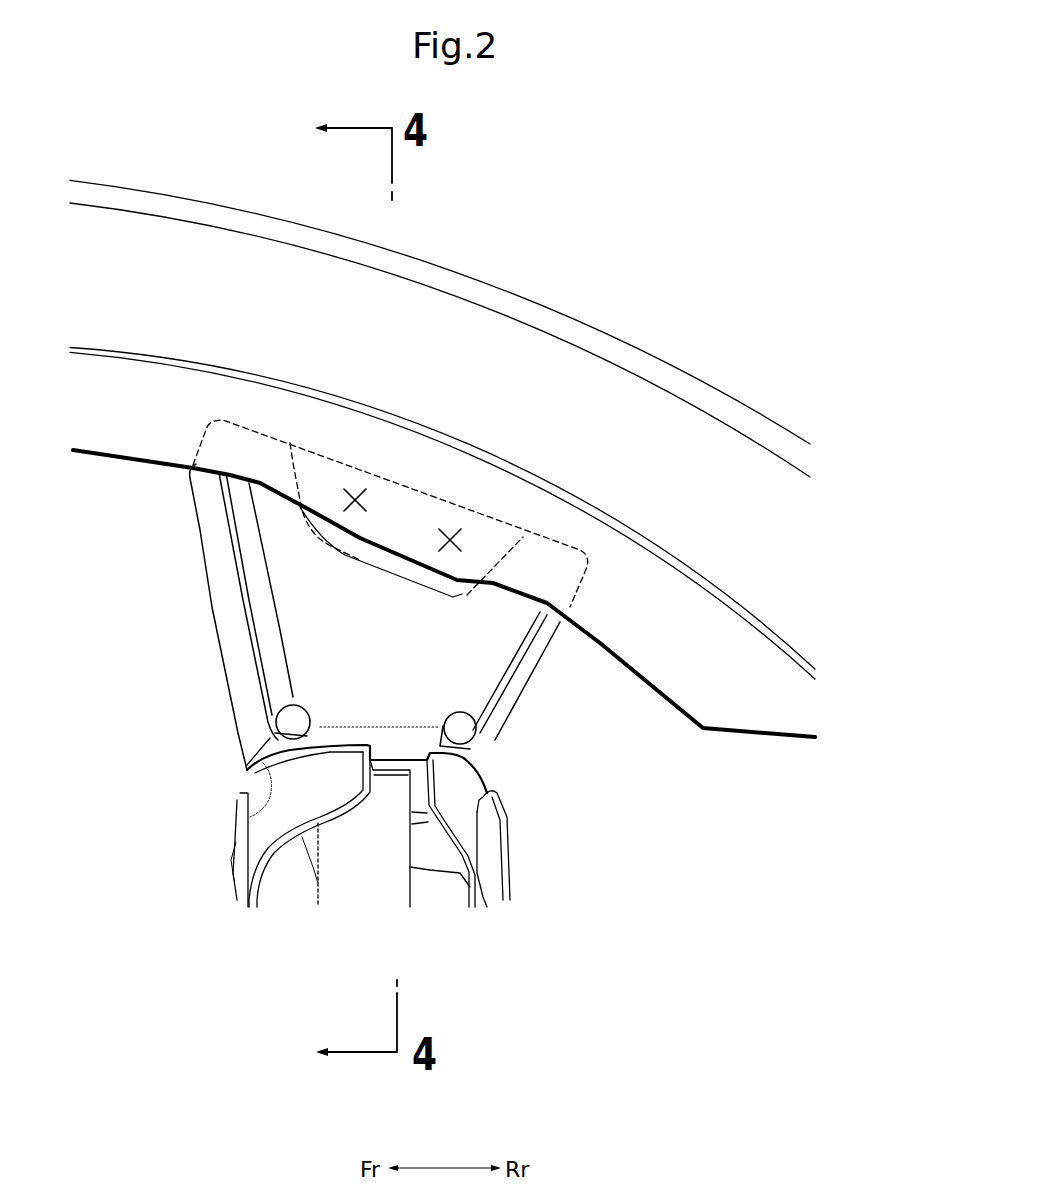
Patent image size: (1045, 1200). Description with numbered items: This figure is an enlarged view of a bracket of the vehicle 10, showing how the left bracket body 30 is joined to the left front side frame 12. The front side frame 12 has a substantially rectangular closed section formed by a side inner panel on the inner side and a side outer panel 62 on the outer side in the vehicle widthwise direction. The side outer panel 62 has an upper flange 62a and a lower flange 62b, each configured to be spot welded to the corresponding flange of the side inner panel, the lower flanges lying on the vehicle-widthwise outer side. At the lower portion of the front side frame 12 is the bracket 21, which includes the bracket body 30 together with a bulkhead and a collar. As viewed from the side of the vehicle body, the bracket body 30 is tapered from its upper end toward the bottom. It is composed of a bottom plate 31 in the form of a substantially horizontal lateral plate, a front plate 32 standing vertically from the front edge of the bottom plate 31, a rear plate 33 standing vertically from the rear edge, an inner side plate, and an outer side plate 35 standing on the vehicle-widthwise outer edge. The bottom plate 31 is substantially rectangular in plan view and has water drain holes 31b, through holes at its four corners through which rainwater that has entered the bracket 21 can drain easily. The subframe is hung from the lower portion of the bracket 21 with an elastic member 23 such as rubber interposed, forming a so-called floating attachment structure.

The vehicle 10 is at (778, 185).
The front side frame 12 is at (456, 263).
The side outer panel 62 is at (442, 521).
The upper flange 62a is at (613, 338).
The lower flange 62b is at (757, 715).
The bracket 21 is at (168, 500).
The bracket body 30 is at (208, 535).
The front plate 32 is at (220, 577).
The rear plate 33 is at (537, 660).
The outer side plate 35 is at (298, 635).
The bottom plate 31 is at (360, 806).
The water drain hole 31b is at (272, 743).
The elastic member 23 is at (237, 840).